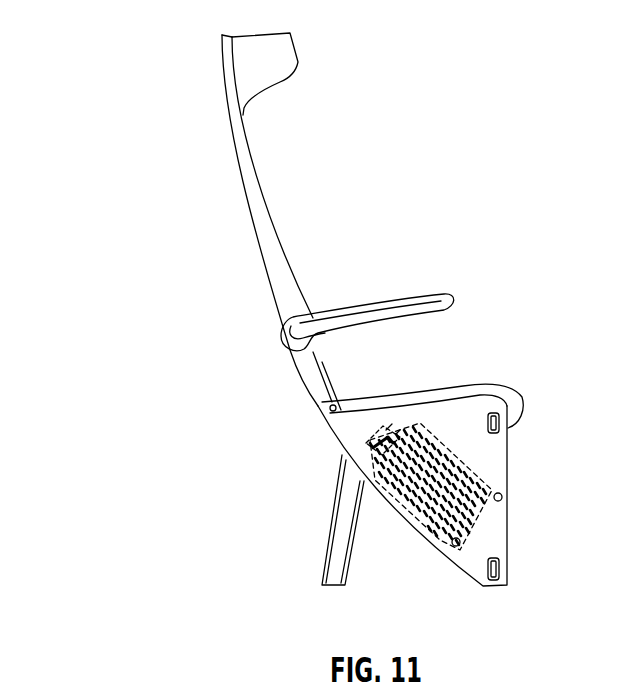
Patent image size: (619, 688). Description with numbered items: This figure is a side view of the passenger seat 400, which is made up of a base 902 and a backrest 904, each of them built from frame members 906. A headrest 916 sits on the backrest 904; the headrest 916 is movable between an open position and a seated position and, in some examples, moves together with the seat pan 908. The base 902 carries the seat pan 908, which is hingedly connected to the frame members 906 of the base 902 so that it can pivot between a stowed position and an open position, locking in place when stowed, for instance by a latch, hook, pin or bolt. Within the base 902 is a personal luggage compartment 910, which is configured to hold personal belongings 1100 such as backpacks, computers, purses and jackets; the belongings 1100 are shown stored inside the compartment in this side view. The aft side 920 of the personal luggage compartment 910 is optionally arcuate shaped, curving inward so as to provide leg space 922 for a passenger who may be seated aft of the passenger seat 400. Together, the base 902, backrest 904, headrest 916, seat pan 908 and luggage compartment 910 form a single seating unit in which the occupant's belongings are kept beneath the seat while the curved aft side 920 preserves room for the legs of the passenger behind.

The passenger seat 400 is at (114, 34).
The headrest 916 is at (268, 42).
The backrest 904 is at (258, 176).
The base 902 is at (446, 410).
The seat pan 908 is at (517, 403).
The personal luggage compartment 910 is at (497, 447).
The personal belongings 1100 is at (485, 490).
The aft side 920 is at (420, 540).
The frame member 906 is at (350, 510).
The leg space 922 is at (360, 592).